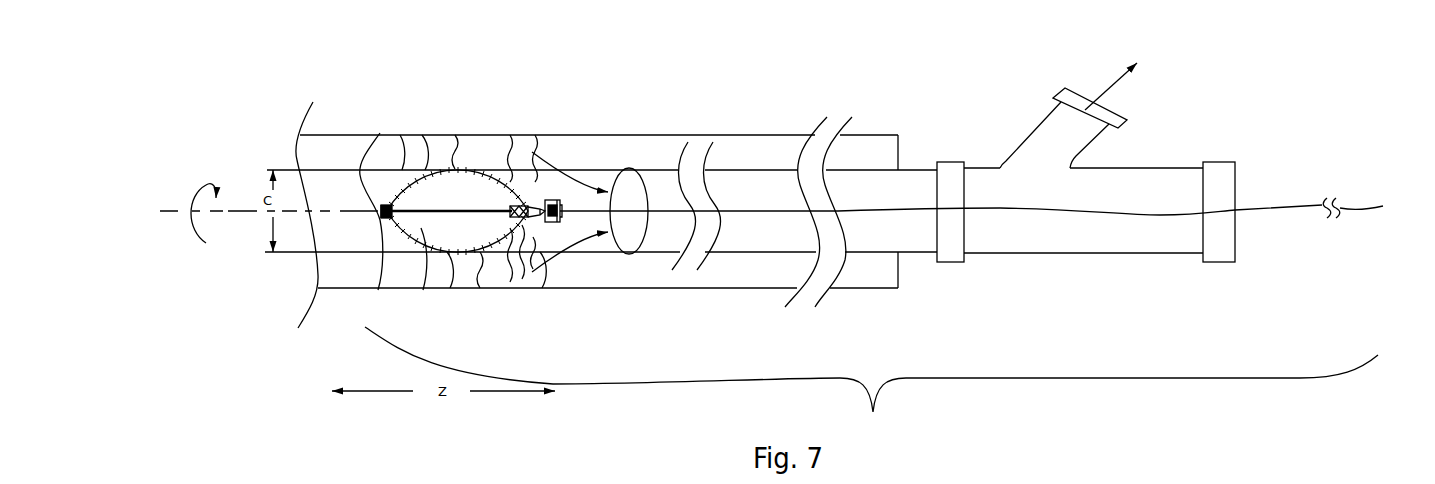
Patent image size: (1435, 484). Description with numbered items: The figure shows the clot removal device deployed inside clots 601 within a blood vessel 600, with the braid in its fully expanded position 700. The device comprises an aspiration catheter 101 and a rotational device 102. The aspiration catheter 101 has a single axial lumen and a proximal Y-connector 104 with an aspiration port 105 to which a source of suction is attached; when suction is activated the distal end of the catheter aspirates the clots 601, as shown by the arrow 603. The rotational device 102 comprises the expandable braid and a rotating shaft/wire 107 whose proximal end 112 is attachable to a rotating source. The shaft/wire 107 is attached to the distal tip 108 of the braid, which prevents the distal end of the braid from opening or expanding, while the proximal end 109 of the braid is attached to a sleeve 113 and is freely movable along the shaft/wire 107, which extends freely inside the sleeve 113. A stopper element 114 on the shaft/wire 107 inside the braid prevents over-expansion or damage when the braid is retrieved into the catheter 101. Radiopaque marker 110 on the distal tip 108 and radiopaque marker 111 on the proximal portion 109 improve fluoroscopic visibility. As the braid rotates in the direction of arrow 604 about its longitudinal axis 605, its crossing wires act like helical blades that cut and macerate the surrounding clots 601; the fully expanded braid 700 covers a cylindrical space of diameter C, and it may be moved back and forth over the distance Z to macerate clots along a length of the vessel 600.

The blood vessel 600 is at (347, 135).
The aspiration catheter 101 is at (852, 167).
The rotating shaft/wire 107 is at (449, 208).
The fully expanded braid 700 is at (448, 172).
The radiopaque marker 110 is at (390, 198).
The distal tip 108 is at (385, 213).
The proximal end of the expandable braid 109 is at (519, 218).
The stopper element 114 is at (507, 207).
The radiopaque marker 111 is at (551, 195).
The sleeve 113 is at (559, 197).
The aspiration arrow 603 is at (575, 181).
The clots 601 is at (438, 273).
The rotation arrow 604 is at (200, 182).
The longitudinal axis 605 is at (177, 212).
The proximal Y-connector 104 is at (1137, 255).
The aspiration port 105 is at (1033, 135).
The proximal end of the rotating shaft/wire 112 is at (1350, 202).
The rotational device 102 is at (871, 382).